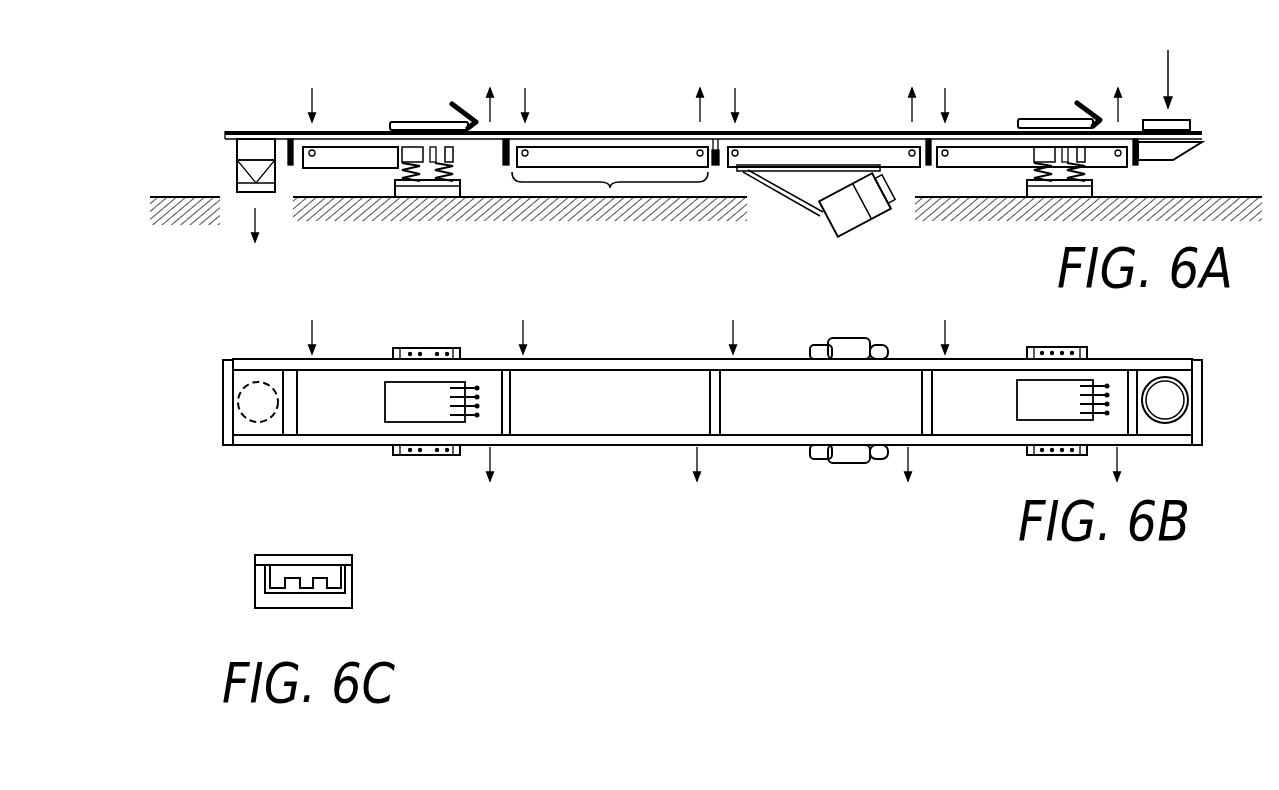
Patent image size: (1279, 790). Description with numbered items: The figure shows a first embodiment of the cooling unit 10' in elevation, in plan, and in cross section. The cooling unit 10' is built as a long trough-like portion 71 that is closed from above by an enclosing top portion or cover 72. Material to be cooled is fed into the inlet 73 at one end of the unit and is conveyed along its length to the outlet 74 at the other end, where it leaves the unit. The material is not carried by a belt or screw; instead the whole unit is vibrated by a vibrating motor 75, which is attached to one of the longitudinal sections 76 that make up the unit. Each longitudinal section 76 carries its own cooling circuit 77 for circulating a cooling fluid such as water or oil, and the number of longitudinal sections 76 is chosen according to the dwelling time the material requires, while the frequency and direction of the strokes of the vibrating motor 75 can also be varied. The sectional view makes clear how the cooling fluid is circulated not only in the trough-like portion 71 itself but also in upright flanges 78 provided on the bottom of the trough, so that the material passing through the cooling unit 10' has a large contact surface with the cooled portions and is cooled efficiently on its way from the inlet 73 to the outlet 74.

In FIG. 6A, the cooling unit 10' is at (713, 90).
In FIG. 6A, the trough-like portion 71 is at (955, 140).
In FIG. 6C, the trough-like portion 71 is at (348, 585).
In FIG. 6A, the cover 72 is at (845, 130).
In FIG. 6B, the cover 72 is at (618, 383).
In FIG. 6C, the cover 72 is at (300, 557).
In FIG. 6A, the inlet 73 is at (1185, 118).
In FIG. 6B, the inlet 73 is at (1178, 397).
In FIG. 6A, the outlet 74 is at (233, 203).
In FIG. 6B, the outlet 74 is at (238, 400).
In FIG. 6A, the vibrating motor 75 is at (838, 228).
In FIG. 6A, the longitudinal section 76 is at (610, 188).
In FIG. 6A, the cooling circuit 77 is at (612, 152).
In FIG. 6C, the upright flanges 78 is at (280, 580).